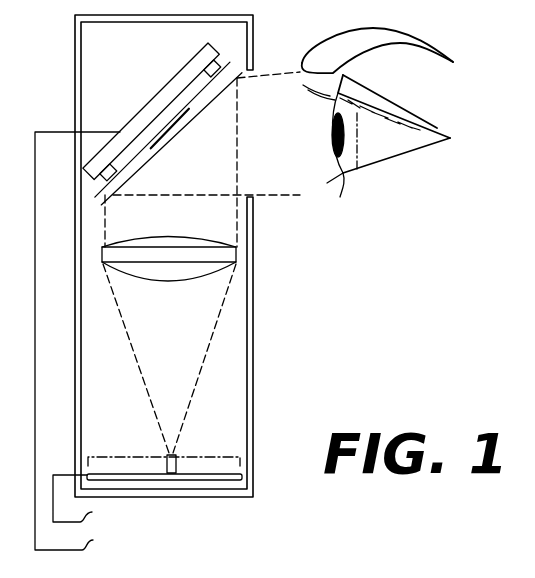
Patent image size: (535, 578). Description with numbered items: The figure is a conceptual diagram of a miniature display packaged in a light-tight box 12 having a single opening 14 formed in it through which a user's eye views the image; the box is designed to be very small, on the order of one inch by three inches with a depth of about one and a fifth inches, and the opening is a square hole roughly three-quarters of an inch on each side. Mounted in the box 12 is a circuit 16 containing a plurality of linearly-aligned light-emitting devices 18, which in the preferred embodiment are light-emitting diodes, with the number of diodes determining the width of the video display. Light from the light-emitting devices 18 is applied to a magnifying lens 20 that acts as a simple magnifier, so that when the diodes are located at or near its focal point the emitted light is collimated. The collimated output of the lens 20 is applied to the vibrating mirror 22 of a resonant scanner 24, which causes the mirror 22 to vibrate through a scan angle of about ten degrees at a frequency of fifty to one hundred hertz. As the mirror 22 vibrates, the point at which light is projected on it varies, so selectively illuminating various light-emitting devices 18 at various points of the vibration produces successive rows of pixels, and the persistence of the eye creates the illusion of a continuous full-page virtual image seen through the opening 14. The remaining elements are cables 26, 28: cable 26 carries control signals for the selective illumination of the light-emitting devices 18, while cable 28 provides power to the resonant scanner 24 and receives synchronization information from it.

The light-tight box 12 is at (78, 43).
The opening 14 is at (245, 94).
The circuit 16 is at (126, 472).
The light-emitting devices 18 is at (177, 465).
The magnifying lens 20 is at (170, 237).
The vibrating mirror 22 is at (110, 203).
The resonant scanner 24 is at (173, 112).
The cable 26 is at (82, 499).
The cable 28 is at (77, 341).